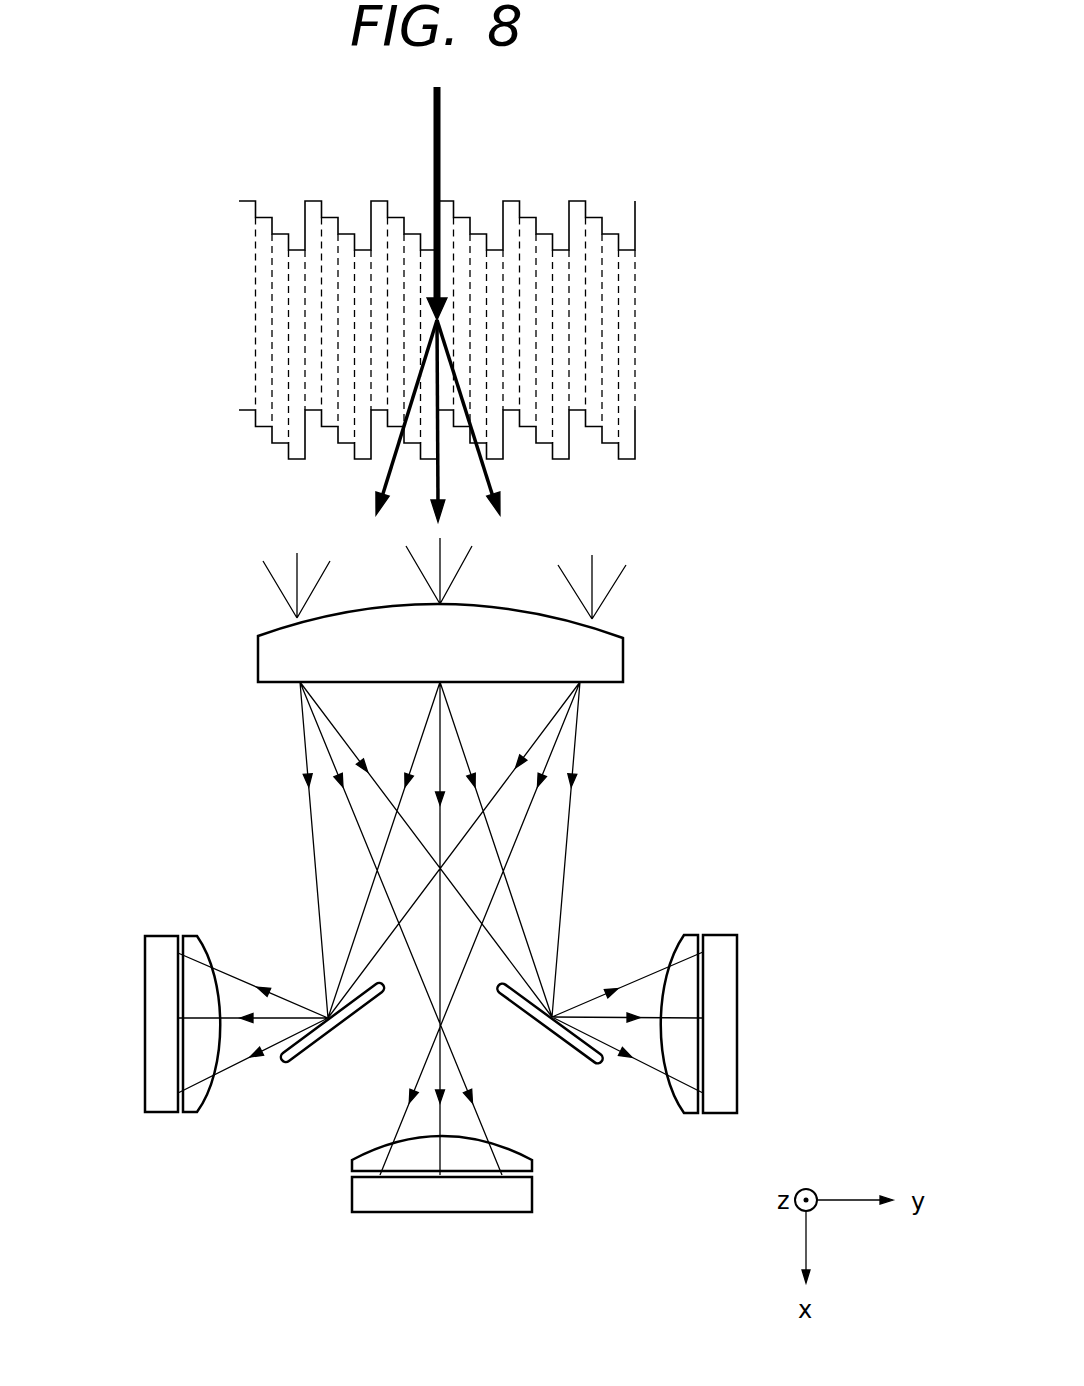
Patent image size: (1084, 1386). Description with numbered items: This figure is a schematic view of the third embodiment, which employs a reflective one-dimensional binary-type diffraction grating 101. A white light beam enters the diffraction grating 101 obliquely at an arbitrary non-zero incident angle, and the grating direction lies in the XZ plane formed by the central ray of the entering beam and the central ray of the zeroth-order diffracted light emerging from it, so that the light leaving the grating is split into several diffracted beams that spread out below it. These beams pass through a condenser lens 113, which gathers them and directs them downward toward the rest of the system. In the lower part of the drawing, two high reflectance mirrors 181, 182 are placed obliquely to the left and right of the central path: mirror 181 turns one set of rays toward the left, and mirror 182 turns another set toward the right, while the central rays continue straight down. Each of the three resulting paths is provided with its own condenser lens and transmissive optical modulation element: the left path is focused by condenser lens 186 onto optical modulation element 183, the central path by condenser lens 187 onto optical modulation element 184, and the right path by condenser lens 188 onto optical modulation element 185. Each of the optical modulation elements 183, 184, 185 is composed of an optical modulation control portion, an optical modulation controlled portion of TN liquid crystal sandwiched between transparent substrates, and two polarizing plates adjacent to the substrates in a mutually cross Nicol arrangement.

The reflective one-dimensional binary-type diffraction grating 101 is at (624, 330).
The condenser lens 113 is at (612, 662).
The high reflectance mirror 181 is at (312, 1050).
The high reflectance mirror 182 is at (568, 1048).
The transmissive optical modulation element 183 is at (157, 1103).
The transmissive optical modulation element 184 is at (522, 1197).
The transmissive optical modulation element 185 is at (723, 1103).
The condenser lens 186 is at (208, 1102).
The condenser lens 187 is at (518, 1150).
The condenser lens 188 is at (677, 1100).